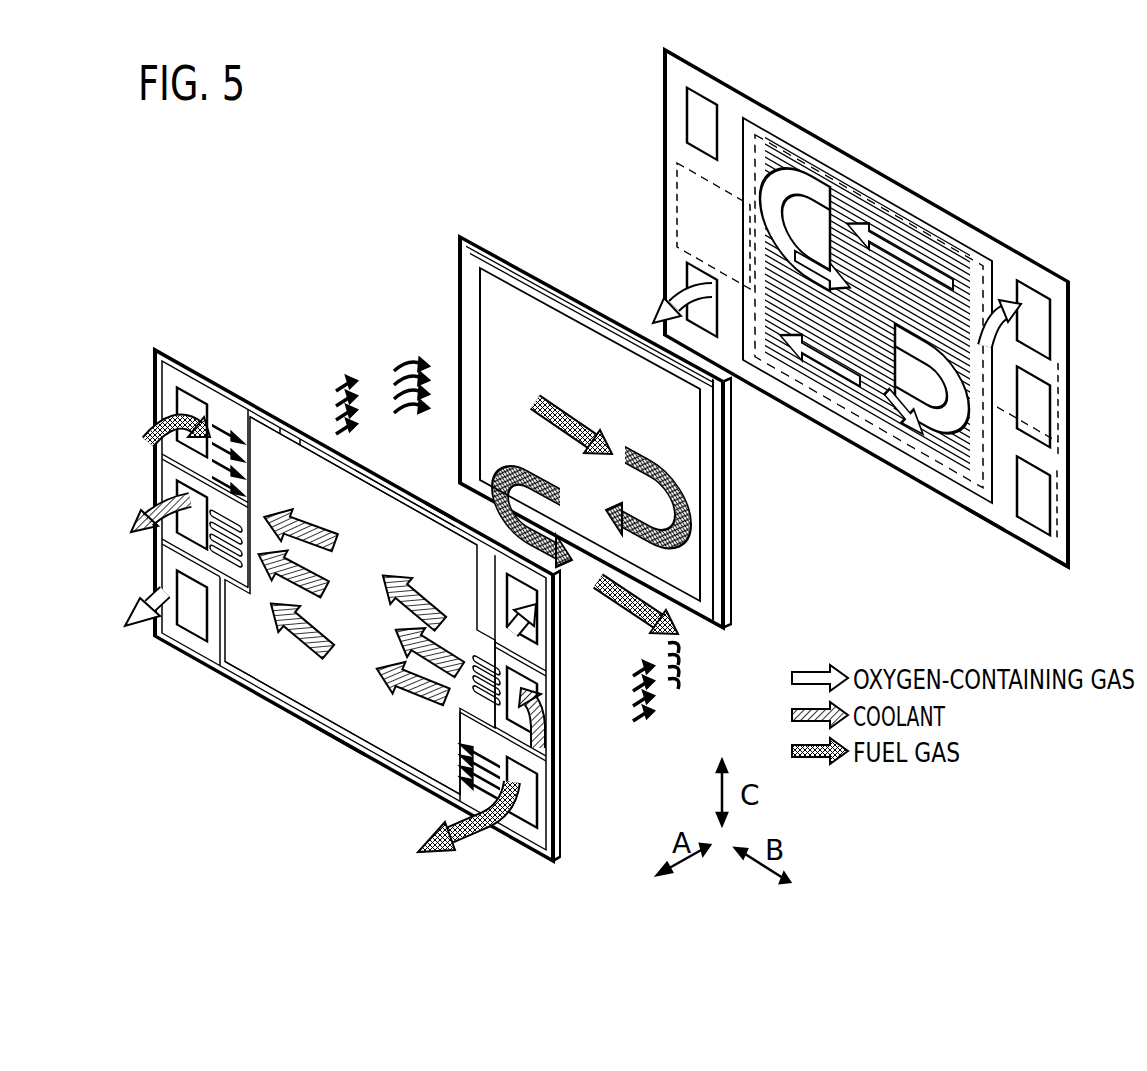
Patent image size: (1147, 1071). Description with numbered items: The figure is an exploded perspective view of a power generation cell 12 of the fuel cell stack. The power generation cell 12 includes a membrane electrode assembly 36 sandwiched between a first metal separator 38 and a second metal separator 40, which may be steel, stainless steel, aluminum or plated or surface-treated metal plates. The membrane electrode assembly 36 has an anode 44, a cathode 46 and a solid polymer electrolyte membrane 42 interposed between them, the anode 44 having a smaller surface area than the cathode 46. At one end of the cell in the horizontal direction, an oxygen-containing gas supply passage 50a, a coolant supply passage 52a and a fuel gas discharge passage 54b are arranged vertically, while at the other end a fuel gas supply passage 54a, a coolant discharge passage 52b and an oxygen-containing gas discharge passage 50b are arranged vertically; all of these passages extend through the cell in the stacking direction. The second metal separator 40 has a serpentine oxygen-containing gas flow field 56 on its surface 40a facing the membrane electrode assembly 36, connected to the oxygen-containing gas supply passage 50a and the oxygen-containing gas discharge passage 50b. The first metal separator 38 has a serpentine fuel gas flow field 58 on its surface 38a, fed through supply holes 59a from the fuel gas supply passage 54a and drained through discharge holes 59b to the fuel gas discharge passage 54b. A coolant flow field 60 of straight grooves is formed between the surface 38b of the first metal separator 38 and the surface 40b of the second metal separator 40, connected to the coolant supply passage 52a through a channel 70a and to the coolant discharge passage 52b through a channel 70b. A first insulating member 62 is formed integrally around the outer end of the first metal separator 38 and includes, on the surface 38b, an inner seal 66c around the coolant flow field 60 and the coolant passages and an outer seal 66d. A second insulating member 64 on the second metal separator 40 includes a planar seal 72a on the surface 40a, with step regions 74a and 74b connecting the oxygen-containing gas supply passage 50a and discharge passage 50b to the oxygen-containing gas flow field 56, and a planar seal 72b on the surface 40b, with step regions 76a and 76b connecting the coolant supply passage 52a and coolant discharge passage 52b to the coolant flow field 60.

The power generation cell 12 is at (297, 226).
The membrane electrode assembly 36 is at (462, 236).
The first metal separator 38 is at (155, 350).
The surface of first metal separator 38a is at (431, 500).
The surface of first metal separator 38b is at (334, 722).
The second metal separator 40 is at (664, 78).
The surface of second metal separator 40a is at (1016, 531).
The surface of second metal separator 40b is at (1050, 544).
The solid polymer electrolyte membrane 42 is at (714, 452).
The anode 44 is at (698, 427).
The cathode 46 is at (732, 477).
The oxygen-containing gas supply passage 50a is at (1040, 324).
The oxygen-containing gas discharge passage 50b is at (692, 282).
The coolant supply passage 52a is at (533, 695).
The coolant discharge passage 52b is at (187, 494).
The fuel gas supply passage 54a is at (187, 411).
The fuel gas discharge passage 54b is at (530, 789).
The oxygen-containing gas flow field 56 is at (798, 176).
The fuel gas flow field 58 is at (391, 483).
The supply holes 59a is at (236, 434).
The discharge holes 59b is at (477, 793).
The coolant flow field 60 is at (277, 455).
The first insulating member 62 is at (258, 703).
The second insulating member 64 is at (958, 222).
The inner seal 66c is at (297, 450).
The outer seal 66d is at (364, 469).
The channel 70a is at (493, 667).
The channel 70b is at (223, 539).
The planar seal 72a is at (1060, 480).
The planar seal 72b is at (1062, 520).
The step region 74a is at (1001, 280).
The step region 74b is at (729, 334).
The step region 76a is at (1066, 422).
The step region 76b is at (690, 209).